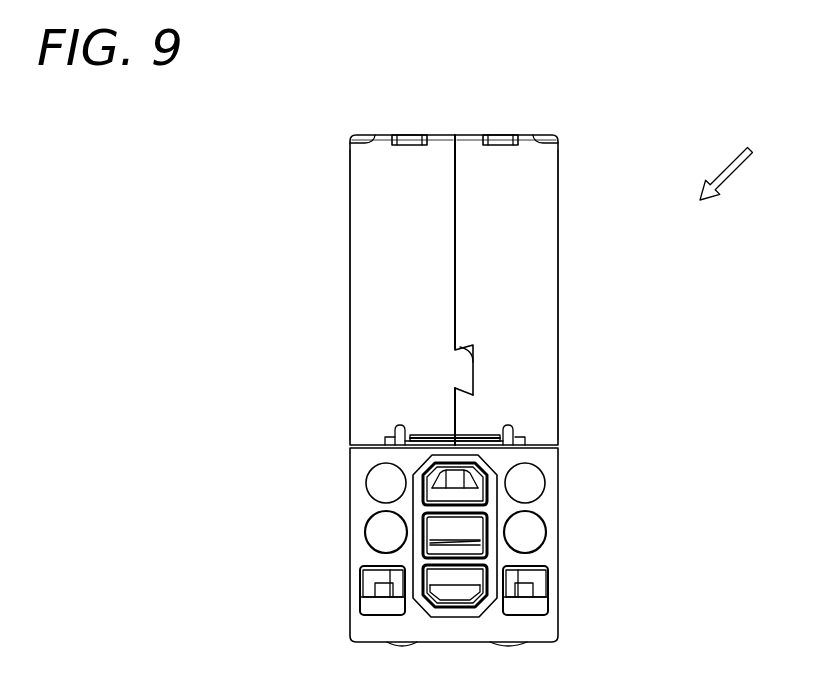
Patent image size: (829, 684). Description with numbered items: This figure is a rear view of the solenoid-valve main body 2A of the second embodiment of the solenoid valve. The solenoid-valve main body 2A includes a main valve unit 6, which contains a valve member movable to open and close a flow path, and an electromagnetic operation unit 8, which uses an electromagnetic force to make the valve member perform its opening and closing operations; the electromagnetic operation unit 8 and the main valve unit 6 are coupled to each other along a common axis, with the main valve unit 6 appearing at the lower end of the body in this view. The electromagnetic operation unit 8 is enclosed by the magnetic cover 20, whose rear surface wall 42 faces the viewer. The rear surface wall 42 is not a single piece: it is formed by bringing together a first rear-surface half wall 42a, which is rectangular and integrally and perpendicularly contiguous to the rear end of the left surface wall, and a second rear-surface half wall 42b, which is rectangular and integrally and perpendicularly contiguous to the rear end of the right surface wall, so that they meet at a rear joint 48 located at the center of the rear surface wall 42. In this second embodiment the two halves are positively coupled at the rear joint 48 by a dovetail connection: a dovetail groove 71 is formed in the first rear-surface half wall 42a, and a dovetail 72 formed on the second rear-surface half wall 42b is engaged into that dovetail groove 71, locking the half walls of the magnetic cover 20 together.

The electromagnetic operation unit 8 is at (343, 176).
The magnetic cover 20 is at (567, 164).
The solenoid-valve main body 2A is at (745, 161).
The rear surface wall 42 is at (262, 200).
The first rear-surface half wall 42a is at (503, 206).
The second rear-surface half wall 42b is at (398, 265).
The rear joint 48 is at (460, 288).
The dovetail groove 71 is at (473, 361).
The dovetail 72 is at (463, 372).
The main valve unit 6 is at (340, 563).